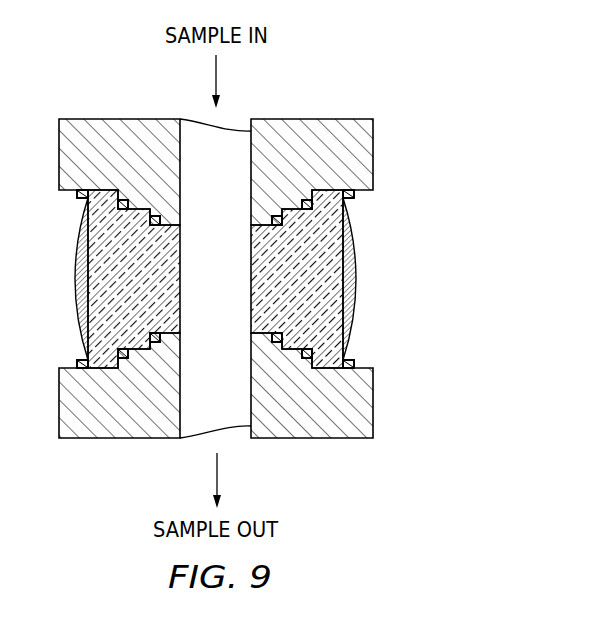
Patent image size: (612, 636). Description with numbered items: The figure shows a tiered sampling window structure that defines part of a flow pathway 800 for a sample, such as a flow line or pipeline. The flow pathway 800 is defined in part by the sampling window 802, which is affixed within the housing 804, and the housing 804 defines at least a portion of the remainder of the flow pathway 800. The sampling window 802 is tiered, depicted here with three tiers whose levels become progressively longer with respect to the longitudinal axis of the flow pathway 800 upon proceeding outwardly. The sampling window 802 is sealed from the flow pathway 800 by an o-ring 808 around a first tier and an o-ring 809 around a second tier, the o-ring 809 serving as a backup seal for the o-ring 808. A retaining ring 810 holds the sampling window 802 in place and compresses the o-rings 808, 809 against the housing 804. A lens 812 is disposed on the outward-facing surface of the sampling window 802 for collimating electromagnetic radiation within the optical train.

The flow pathway 800 is at (233, 176).
The sampling window 802 is at (358, 279).
The housing 804 is at (373, 153).
The o-ring 808 is at (274, 221).
The o-ring 809 is at (303, 201).
The retaining ring 810 is at (354, 196).
The lens 812 is at (353, 306).